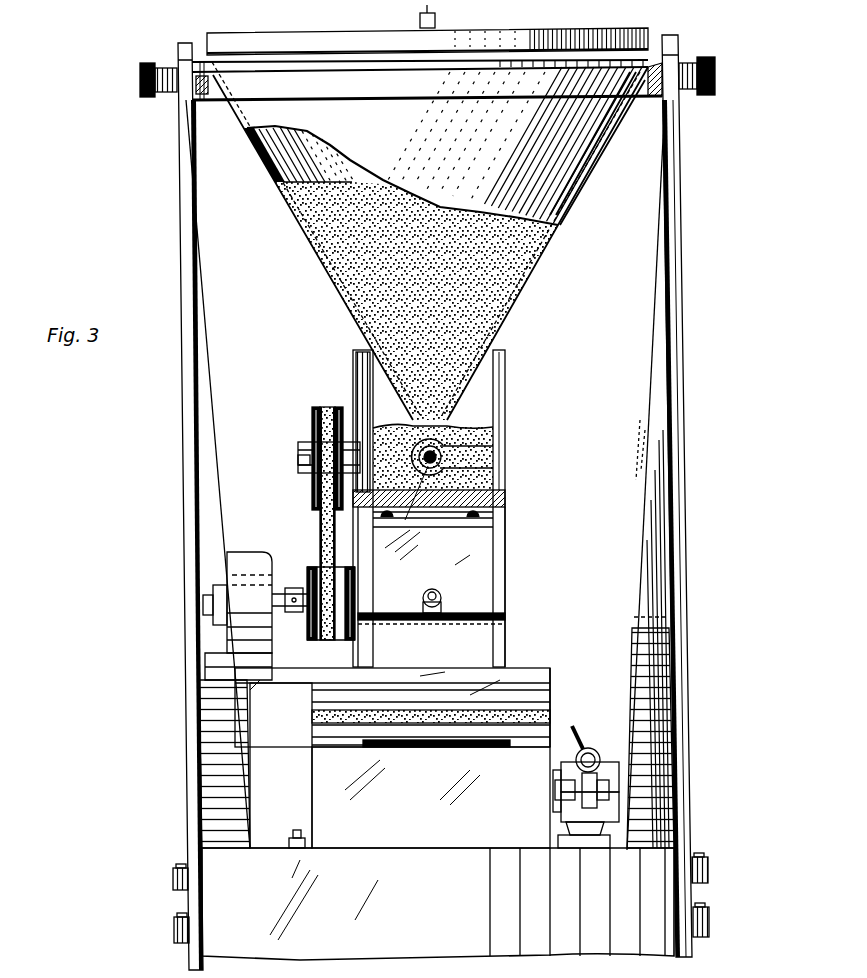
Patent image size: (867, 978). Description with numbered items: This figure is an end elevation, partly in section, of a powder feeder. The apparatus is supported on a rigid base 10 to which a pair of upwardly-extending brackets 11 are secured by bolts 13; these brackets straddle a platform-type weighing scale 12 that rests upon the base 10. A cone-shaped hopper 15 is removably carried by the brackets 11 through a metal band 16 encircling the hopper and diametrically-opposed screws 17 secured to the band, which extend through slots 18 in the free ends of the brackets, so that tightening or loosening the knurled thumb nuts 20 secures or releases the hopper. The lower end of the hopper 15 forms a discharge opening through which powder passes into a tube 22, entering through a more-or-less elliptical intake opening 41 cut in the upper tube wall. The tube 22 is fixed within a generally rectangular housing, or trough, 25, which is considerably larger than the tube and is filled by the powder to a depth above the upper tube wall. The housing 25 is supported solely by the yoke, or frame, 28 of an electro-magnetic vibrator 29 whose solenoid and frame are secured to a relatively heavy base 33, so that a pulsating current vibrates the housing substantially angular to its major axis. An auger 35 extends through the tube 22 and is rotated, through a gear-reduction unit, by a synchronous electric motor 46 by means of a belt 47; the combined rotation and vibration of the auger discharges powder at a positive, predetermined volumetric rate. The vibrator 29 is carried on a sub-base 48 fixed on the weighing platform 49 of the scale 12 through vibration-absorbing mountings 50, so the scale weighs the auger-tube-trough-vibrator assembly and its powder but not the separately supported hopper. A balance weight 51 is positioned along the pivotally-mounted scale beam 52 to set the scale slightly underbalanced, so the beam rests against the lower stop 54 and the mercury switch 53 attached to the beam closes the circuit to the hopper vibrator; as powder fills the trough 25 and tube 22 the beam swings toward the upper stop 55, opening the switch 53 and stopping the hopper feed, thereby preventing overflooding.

The rigid base 10 is at (657, 868).
The upwardly-extending brackets 11 is at (180, 425).
The platform-type weighing scale 12 is at (309, 793).
The bolts 13 is at (432, 8).
The cone-shaped hopper 15 is at (340, 265).
The metal band 16 is at (273, 88).
The screws 17 is at (140, 80).
The slots 18 is at (172, 106).
The knurled thumb nuts 20 is at (160, 98).
The tube 22 is at (505, 460).
The housing 25 is at (353, 390).
The yoke 28 is at (492, 562).
The electro-magnetic vibrator 29 is at (522, 607).
The base 33 is at (490, 645).
The auger 35 is at (405, 520).
The intake opening 41 is at (505, 428).
The synchronous electric motor 46 is at (248, 560).
The belt 47 is at (322, 525).
The sub-base 48 is at (528, 668).
The weighing platform 49 is at (325, 731).
The vibration-absorbing mountings 50 is at (545, 703).
The balance weight 51 is at (619, 765).
The scale beam 52 is at (600, 807).
The mercury switch 53 is at (597, 750).
The lower stop 54 is at (560, 822).
The upper stop 55 is at (555, 757).